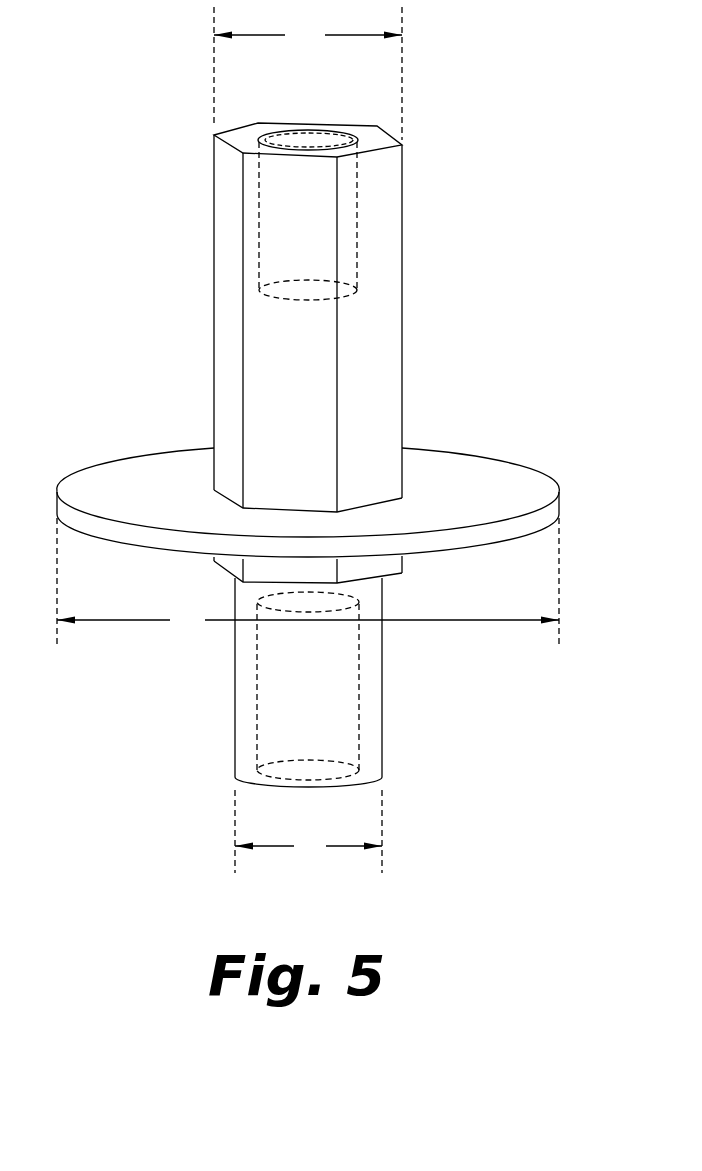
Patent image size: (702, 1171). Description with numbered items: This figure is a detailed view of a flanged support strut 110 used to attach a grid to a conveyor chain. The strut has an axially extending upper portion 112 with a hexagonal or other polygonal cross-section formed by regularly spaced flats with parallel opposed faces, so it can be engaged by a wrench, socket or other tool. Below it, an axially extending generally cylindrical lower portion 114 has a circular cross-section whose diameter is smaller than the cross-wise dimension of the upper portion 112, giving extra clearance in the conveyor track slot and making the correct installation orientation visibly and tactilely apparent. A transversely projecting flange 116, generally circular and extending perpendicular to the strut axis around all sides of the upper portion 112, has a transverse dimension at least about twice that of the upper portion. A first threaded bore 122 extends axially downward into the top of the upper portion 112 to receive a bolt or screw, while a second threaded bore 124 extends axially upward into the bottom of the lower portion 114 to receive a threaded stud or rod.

The flanged support strut 110 is at (455, 135).
The upper portion 112 is at (363, 387).
The lower portion 114 is at (403, 699).
The transversely projecting flange 116 is at (128, 493).
The first threaded bore 122 is at (318, 137).
The second threaded bore 124 is at (313, 773).